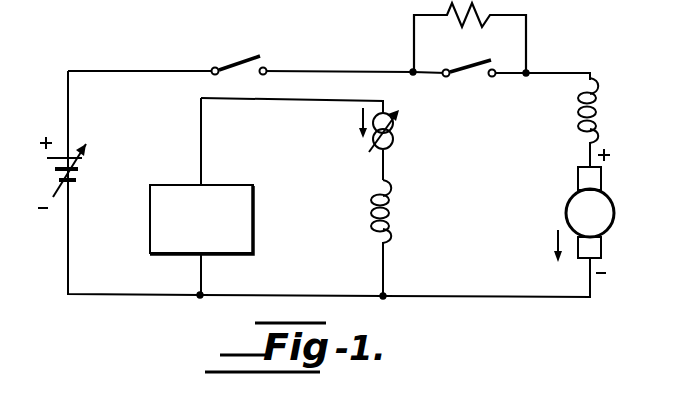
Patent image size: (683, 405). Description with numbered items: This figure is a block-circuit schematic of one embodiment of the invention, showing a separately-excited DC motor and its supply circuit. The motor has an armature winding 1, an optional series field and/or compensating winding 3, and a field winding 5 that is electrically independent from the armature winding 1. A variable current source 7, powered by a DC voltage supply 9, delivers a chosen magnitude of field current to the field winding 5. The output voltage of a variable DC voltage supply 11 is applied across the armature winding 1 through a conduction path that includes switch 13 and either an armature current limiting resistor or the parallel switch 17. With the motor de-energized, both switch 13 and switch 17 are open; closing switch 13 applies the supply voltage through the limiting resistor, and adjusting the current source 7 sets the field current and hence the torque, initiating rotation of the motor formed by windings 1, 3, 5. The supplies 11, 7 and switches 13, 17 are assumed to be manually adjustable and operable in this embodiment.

The armature winding 1 is at (601, 175).
The series field and/or compensating winding 3 is at (600, 104).
The field winding 5 is at (394, 214).
The variable current source 7 is at (398, 141).
The DC voltage supply 9 is at (226, 185).
The variable DC voltage supply 11 is at (87, 159).
The switch 13 is at (234, 62).
The switch 17 is at (460, 66).